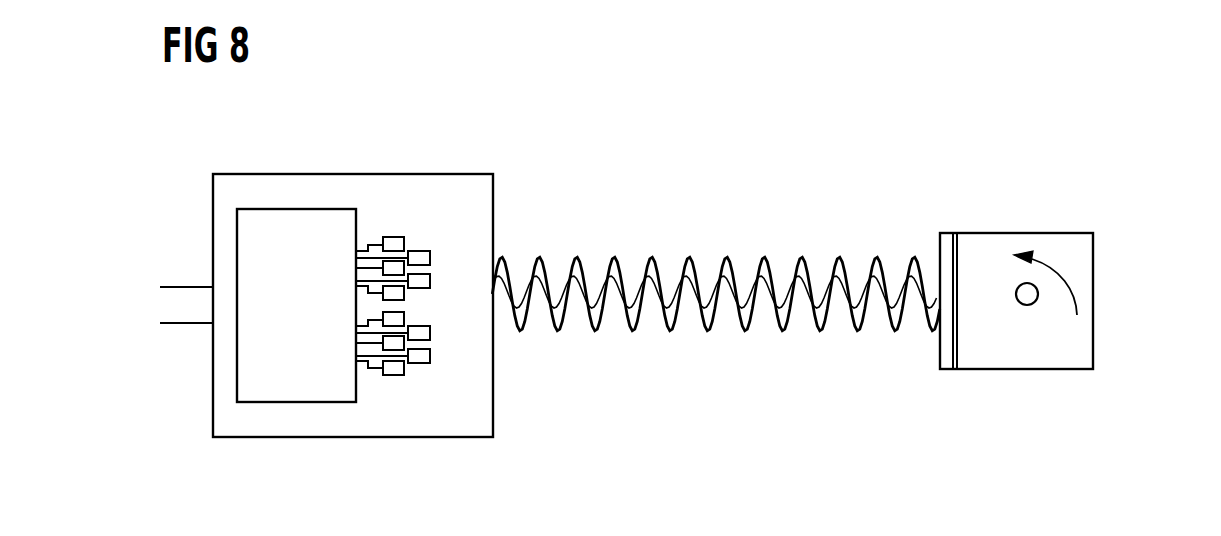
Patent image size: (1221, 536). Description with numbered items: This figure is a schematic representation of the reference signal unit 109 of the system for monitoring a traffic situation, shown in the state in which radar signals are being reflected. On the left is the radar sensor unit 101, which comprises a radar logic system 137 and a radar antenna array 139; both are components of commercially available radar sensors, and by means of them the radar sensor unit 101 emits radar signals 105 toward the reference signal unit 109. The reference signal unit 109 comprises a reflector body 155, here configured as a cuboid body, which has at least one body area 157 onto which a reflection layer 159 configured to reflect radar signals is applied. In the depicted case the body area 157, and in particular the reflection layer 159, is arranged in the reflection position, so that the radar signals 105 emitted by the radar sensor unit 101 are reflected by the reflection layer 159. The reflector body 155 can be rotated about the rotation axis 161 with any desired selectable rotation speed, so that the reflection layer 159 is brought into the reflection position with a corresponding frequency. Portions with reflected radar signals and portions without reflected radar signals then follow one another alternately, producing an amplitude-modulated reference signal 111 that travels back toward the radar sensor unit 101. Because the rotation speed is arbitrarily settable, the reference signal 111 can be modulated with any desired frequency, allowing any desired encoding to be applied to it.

The radar sensor unit 101 is at (352, 173).
The radar signals 105 is at (613, 258).
The reference signal unit 109 is at (1033, 96).
The reference signal 111 is at (745, 278).
The radar logic system 137 is at (357, 225).
The radar antenna array 139 is at (418, 389).
The reflector body 155 is at (1060, 232).
The body area 157 is at (958, 252).
The reflection layer 159 is at (951, 240).
The rotation axis 161 is at (1002, 323).